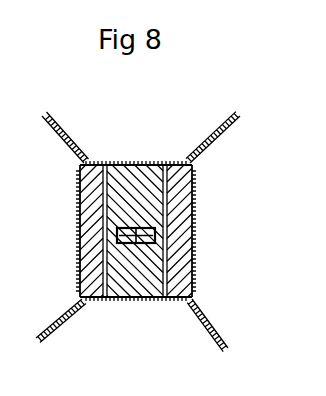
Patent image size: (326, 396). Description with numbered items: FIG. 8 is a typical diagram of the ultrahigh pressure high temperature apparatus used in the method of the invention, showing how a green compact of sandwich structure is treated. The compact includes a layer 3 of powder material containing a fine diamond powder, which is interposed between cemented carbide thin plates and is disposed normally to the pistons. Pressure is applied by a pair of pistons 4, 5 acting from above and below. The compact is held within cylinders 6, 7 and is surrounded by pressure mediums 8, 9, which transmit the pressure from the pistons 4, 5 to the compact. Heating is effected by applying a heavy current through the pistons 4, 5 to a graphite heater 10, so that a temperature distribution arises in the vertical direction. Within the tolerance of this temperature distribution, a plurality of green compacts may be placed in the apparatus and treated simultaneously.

The layer of powder material 3 is at (143, 222).
The piston 4 is at (121, 162).
The piston 5 is at (121, 301).
The cylinder 6 is at (70, 240).
The cylinder 7 is at (198, 236).
The pressure medium 8 is at (143, 189).
The pressure medium 9 is at (175, 270).
The graphite heater 10 is at (194, 252).